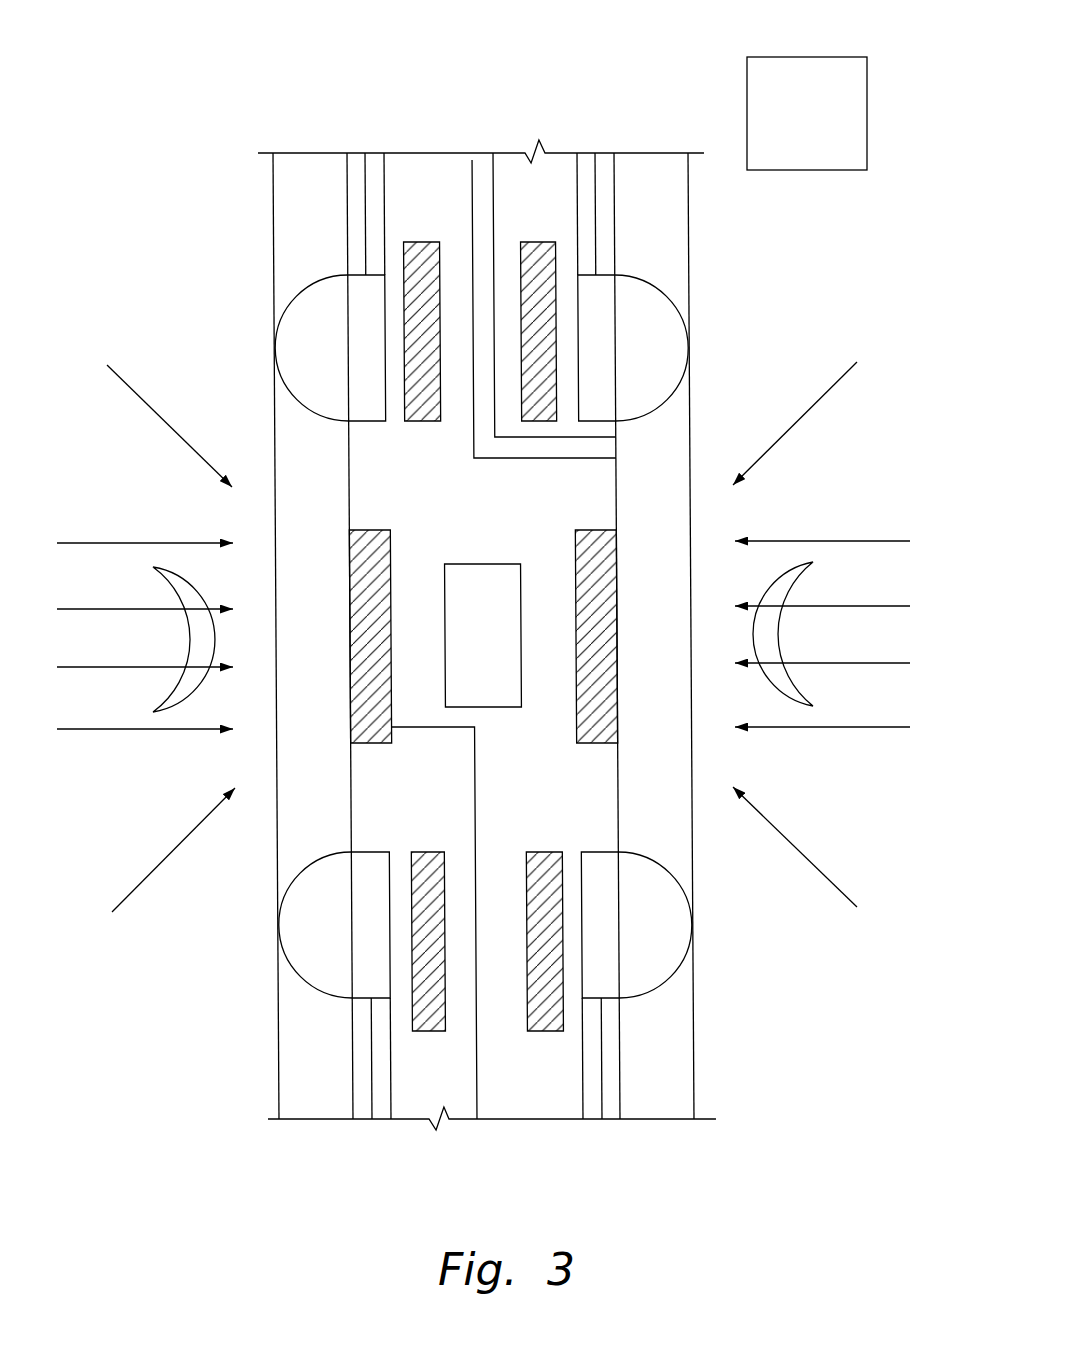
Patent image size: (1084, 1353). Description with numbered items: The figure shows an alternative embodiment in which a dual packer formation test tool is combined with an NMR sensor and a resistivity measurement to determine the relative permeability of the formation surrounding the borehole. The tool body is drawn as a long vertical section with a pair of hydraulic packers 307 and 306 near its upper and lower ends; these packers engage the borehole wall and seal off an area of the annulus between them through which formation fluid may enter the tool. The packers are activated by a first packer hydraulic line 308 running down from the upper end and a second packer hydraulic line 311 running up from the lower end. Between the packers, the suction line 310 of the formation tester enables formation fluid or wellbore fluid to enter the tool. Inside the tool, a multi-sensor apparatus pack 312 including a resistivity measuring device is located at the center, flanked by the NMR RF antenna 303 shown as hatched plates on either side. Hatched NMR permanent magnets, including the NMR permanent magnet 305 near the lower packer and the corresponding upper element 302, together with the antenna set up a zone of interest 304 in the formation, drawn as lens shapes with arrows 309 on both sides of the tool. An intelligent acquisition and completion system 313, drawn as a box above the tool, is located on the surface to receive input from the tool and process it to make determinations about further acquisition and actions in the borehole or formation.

The upper magnet element 302 is at (537, 247).
The NMR RF antenna 303 is at (588, 730).
The zone of interest 304 is at (768, 632).
The NMR permanent magnet 305 is at (542, 1023).
The hydraulic packer 306 is at (292, 923).
The hydraulic packer 307 is at (287, 348).
The hydraulic line of packer 1 308 is at (375, 220).
The left light beam 309 is at (116, 543).
The suction line 310 is at (545, 450).
The hydraulic line of packer 2 311 is at (382, 1057).
The multi-sensor apparatus pack 312 is at (484, 575).
The intelligent acquisition and completion system 313 is at (810, 55).